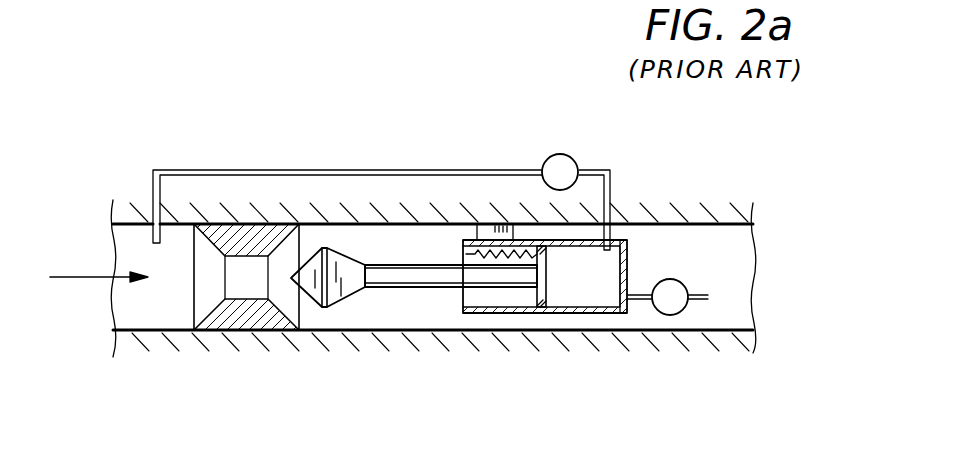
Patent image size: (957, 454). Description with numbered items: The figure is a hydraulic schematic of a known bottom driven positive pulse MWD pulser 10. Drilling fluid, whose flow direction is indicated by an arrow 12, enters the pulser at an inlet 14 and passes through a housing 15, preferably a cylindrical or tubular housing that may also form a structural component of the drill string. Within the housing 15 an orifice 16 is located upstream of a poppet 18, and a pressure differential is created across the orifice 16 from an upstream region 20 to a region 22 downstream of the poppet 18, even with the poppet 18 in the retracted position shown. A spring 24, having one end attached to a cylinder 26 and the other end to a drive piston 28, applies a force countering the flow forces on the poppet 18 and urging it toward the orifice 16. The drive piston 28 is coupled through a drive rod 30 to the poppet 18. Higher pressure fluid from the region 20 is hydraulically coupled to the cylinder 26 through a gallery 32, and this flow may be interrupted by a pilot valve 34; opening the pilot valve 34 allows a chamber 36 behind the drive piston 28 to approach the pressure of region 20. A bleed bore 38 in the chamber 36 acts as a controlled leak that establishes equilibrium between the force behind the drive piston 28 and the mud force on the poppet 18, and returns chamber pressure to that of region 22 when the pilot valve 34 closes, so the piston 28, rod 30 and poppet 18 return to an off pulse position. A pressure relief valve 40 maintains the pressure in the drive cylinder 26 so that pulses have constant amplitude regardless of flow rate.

The bottom driven positive pulse MWD pulser 10 is at (195, 137).
The arrow 12 is at (70, 272).
The inlet 14 is at (130, 316).
The housing 15 is at (663, 220).
The orifice 16 is at (252, 288).
The poppet 18 is at (323, 308).
The upstream region 20 is at (207, 303).
The downstream region 22 is at (380, 250).
The spring 24 is at (464, 258).
The drive cylinder 26 is at (505, 313).
The drive piston 28 is at (542, 309).
The drive rod 30 is at (423, 288).
The gallery 32 is at (289, 168).
The pilot valve 34 is at (560, 153).
The chamber 36 is at (618, 247).
The bleed bore 38 is at (628, 311).
The pressure relief valve 40 is at (681, 280).